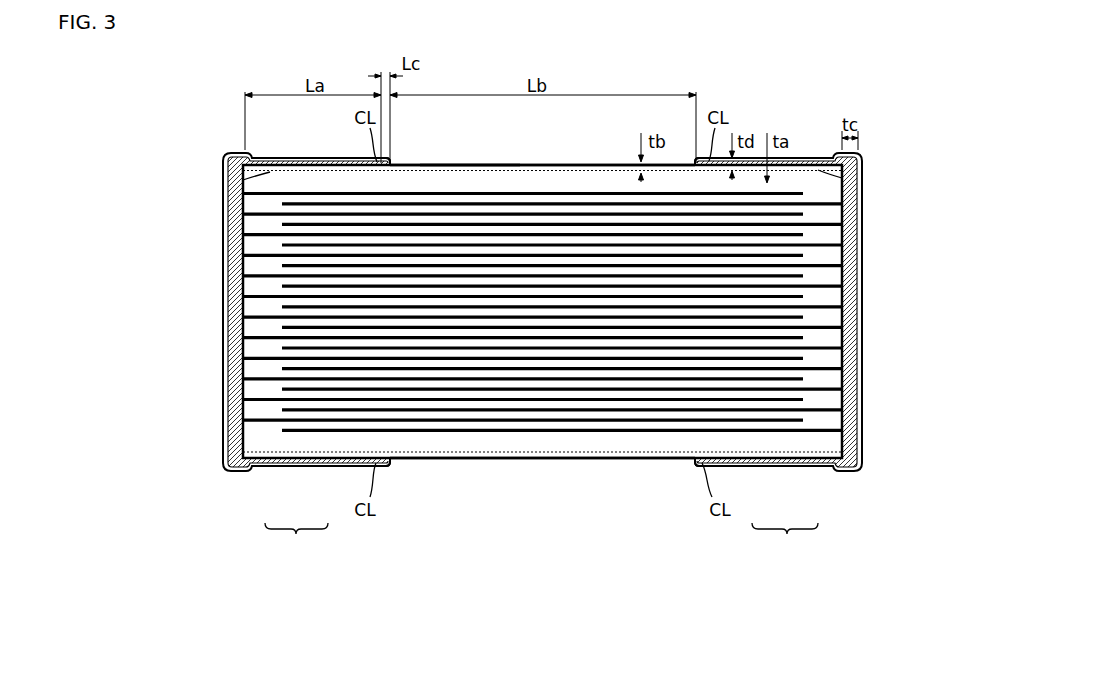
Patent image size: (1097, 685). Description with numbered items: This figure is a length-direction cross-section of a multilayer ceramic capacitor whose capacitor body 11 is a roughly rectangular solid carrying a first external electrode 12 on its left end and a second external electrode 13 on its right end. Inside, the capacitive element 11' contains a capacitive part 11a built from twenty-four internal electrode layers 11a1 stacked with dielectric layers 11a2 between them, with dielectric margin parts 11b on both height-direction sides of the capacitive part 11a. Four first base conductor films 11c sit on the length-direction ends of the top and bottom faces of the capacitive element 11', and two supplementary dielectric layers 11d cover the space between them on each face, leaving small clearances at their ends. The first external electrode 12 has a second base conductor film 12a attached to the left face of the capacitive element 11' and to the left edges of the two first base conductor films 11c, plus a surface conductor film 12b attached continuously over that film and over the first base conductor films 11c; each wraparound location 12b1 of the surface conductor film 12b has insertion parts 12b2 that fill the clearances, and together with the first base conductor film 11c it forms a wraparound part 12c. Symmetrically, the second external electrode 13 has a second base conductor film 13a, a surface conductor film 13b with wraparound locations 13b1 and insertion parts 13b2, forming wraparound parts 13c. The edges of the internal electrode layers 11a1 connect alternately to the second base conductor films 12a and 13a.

The capacitor body 11 is at (542, 283).
The capacitive element 11' is at (470, 136).
The capacitive part 11a is at (542, 314).
The internal electrode layers 11a1 is at (472, 432).
The dielectric layers 11a2 is at (522, 422).
The dielectric margin parts 11b is at (577, 182).
The first base conductor films 11c is at (222, 175).
The supplementary dielectric layers 11d is at (615, 168).
The first external electrode 12 is at (291, 335).
The second base conductor film 12a is at (233, 250).
The surface conductor film 12b is at (225, 364).
The wraparound location 12b1 is at (276, 157).
The insertion parts 12b2 is at (392, 162).
The wraparound parts 12c is at (296, 542).
The second external electrode 13 is at (789, 335).
The second base conductor film 13a is at (852, 250).
The surface conductor film 13b is at (860, 364).
The wraparound location 13b1 is at (808, 157).
The insertion parts 13b2 is at (692, 162).
The wraparound parts 13c is at (785, 542).